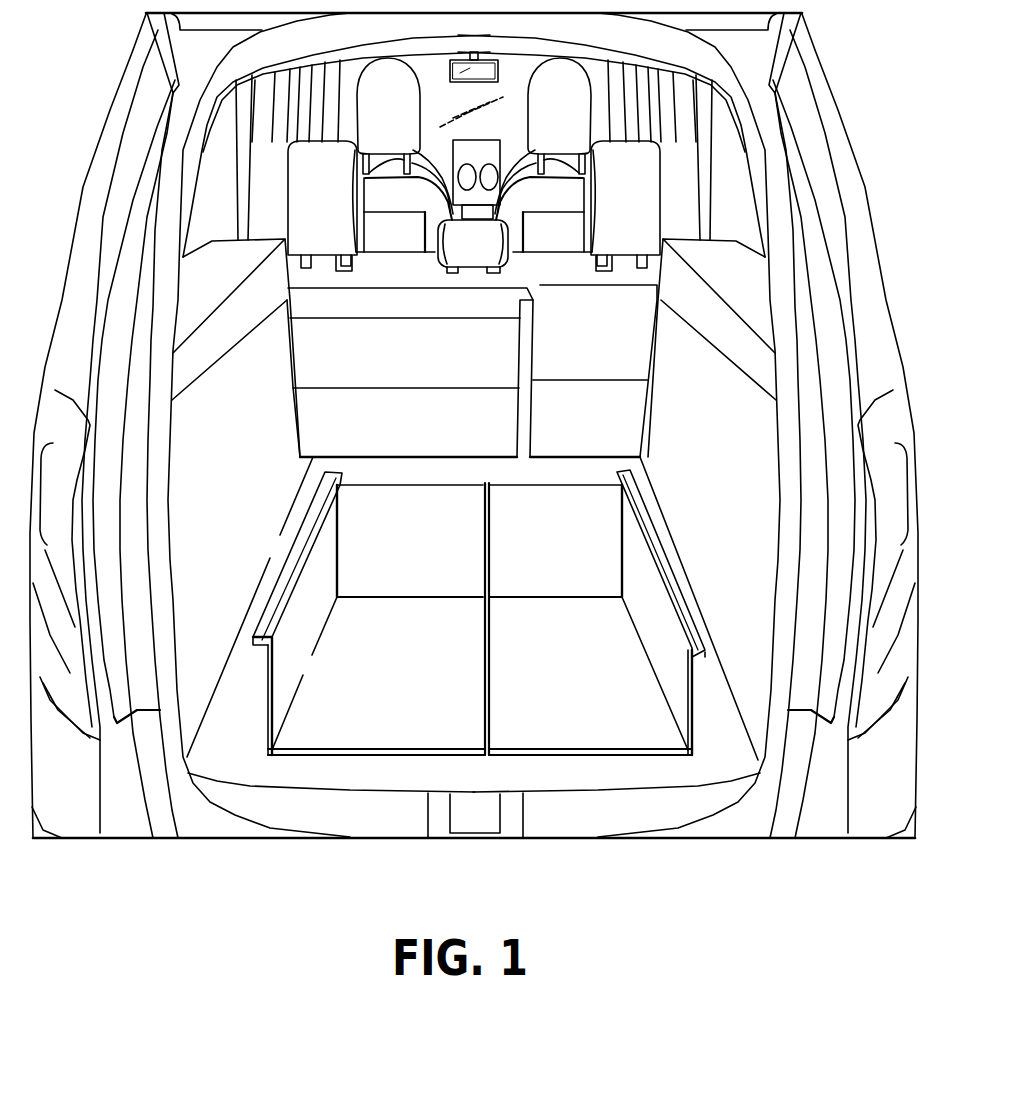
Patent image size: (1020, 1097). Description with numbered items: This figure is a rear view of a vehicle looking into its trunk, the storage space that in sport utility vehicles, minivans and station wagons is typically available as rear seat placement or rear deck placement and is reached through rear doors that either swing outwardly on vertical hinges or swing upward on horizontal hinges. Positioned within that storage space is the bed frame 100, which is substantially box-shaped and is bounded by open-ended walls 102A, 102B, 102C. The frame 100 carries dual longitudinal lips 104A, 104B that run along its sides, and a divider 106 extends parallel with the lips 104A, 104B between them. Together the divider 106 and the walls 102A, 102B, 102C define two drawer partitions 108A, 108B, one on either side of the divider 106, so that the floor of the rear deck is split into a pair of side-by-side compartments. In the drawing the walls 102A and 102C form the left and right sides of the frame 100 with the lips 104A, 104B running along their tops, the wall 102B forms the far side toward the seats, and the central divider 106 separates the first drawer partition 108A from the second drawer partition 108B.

The bed frame 100 is at (474, 425).
The open-ended wall 102A is at (284, 696).
The open-ended wall 102B is at (479, 532).
The open-ended wall 102C is at (712, 702).
The longitudinal lip 104A is at (292, 556).
The longitudinal lip 104B is at (677, 563).
The divider 106 is at (505, 619).
The drawer partition 108A is at (376, 676).
The drawer partition 108B is at (590, 676).